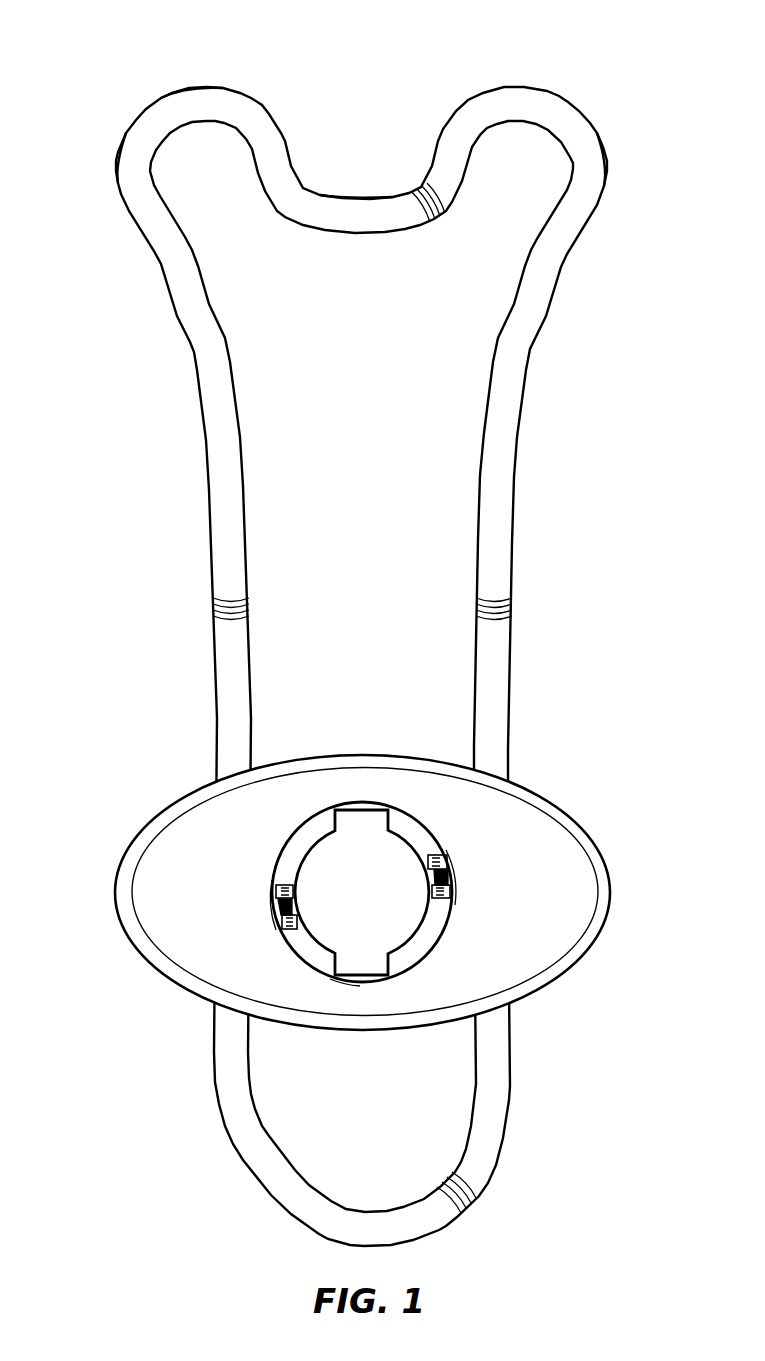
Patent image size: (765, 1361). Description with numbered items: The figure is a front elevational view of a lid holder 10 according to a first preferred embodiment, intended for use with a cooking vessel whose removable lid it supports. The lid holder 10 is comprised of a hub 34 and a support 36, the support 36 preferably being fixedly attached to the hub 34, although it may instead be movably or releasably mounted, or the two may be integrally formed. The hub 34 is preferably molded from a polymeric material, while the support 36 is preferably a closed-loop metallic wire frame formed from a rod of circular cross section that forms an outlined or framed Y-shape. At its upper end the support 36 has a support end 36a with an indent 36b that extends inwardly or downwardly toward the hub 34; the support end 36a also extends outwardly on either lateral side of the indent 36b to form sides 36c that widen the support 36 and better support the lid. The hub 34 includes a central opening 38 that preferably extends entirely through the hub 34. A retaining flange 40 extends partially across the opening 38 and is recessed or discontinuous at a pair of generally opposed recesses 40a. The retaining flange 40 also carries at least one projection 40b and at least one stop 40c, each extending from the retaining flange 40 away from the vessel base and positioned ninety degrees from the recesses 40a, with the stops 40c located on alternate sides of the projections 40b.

The lid holder 10 is at (559, 49).
The hub 34 is at (173, 851).
The support 36 is at (517, 514).
The support end 36a is at (191, 88).
The indent 36b is at (356, 198).
The sides 36c is at (115, 172).
The central opening 38 is at (293, 894).
The retaining flange 40 is at (362, 954).
The recesses 40a is at (355, 812).
The projection 40b is at (277, 892).
The stop 40c is at (613, 965).